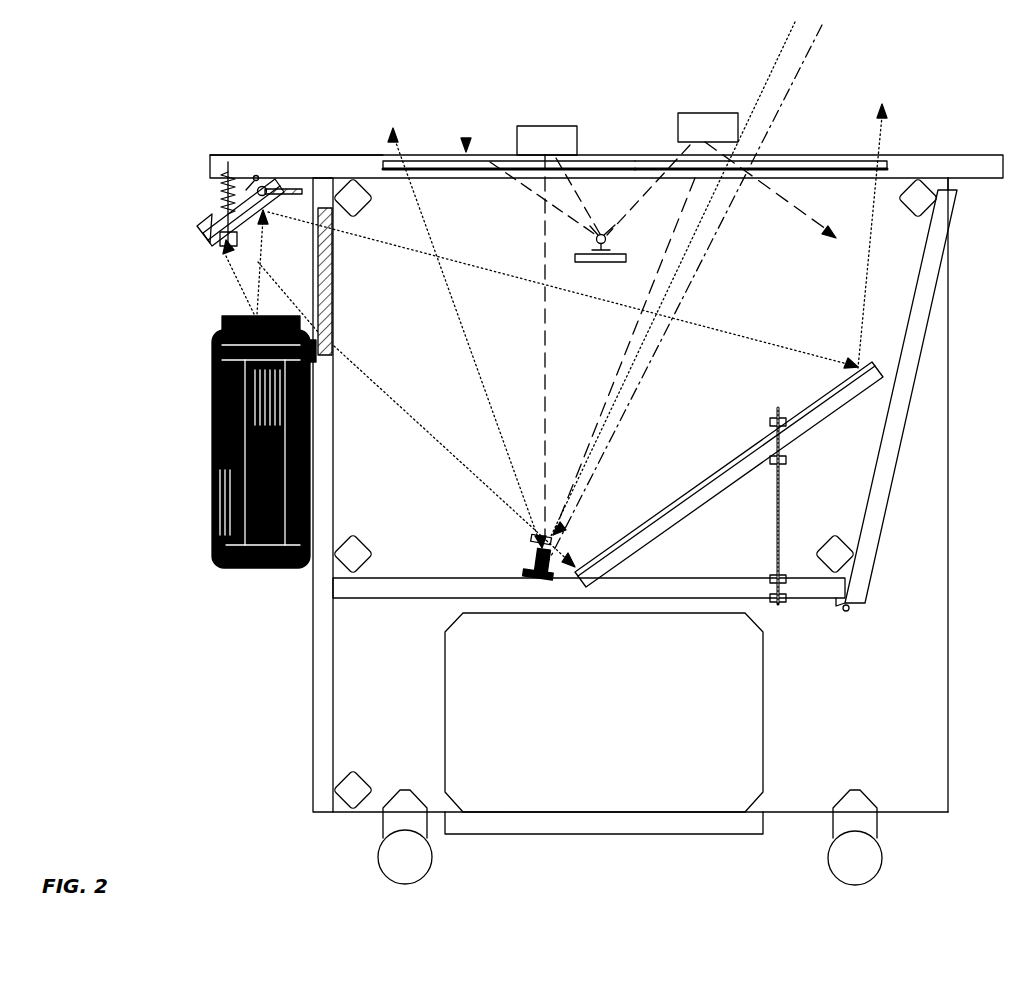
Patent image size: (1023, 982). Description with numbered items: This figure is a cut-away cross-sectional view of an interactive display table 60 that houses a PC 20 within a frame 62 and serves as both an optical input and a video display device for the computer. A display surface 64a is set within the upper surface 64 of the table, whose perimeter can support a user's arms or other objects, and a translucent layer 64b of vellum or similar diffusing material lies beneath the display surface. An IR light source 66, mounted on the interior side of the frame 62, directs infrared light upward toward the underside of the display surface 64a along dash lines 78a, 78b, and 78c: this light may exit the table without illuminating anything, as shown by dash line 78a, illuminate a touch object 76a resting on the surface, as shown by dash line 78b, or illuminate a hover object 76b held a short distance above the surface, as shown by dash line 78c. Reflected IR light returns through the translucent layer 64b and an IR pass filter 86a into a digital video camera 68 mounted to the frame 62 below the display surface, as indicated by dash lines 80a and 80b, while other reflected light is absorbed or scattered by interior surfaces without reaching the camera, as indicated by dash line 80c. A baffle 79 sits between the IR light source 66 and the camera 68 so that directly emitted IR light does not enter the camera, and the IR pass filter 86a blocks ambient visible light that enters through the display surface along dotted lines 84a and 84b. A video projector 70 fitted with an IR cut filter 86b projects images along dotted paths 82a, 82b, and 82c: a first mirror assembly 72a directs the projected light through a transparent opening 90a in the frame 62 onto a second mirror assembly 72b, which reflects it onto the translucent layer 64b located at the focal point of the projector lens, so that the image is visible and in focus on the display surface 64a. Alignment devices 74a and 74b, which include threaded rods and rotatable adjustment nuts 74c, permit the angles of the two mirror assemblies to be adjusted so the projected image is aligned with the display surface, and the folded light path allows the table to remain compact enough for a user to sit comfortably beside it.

The PC 20 is at (763, 712).
The interactive display table 60 is at (207, 640).
The frame 62 is at (313, 703).
The upper surface 64 is at (352, 158).
The display surface 64a is at (440, 160).
The translucent layer 64b is at (805, 160).
The IR light sources 66 is at (595, 241).
The digital video camera 68 is at (532, 552).
The video projector 70 is at (207, 420).
The first mirror assembly 72a is at (210, 244).
The second mirror assembly 72b is at (692, 478).
The alignment device 74a is at (285, 180).
The alignment device 74b is at (783, 486).
The rotatable adjustment nuts 74c is at (222, 236).
The touch object 76a is at (530, 125).
The hover object 76b is at (700, 113).
The dash line 78a is at (520, 182).
The dash line 78b is at (578, 196).
The dash line 78c is at (698, 183).
The baffle 79 is at (605, 264).
The dash line 80a is at (540, 340).
The dash line 80b is at (618, 358).
The dash line 80c is at (785, 222).
The dotted path 82a is at (238, 285).
The dotted path 82b is at (460, 445).
The dotted path 82c is at (455, 290).
The dotted line 84a is at (780, 52).
The dotted line 84b is at (826, 54).
The IR pass filter 86a is at (532, 538).
The IR cut filter 86b is at (220, 320).
The transparent opening 90a is at (335, 328).